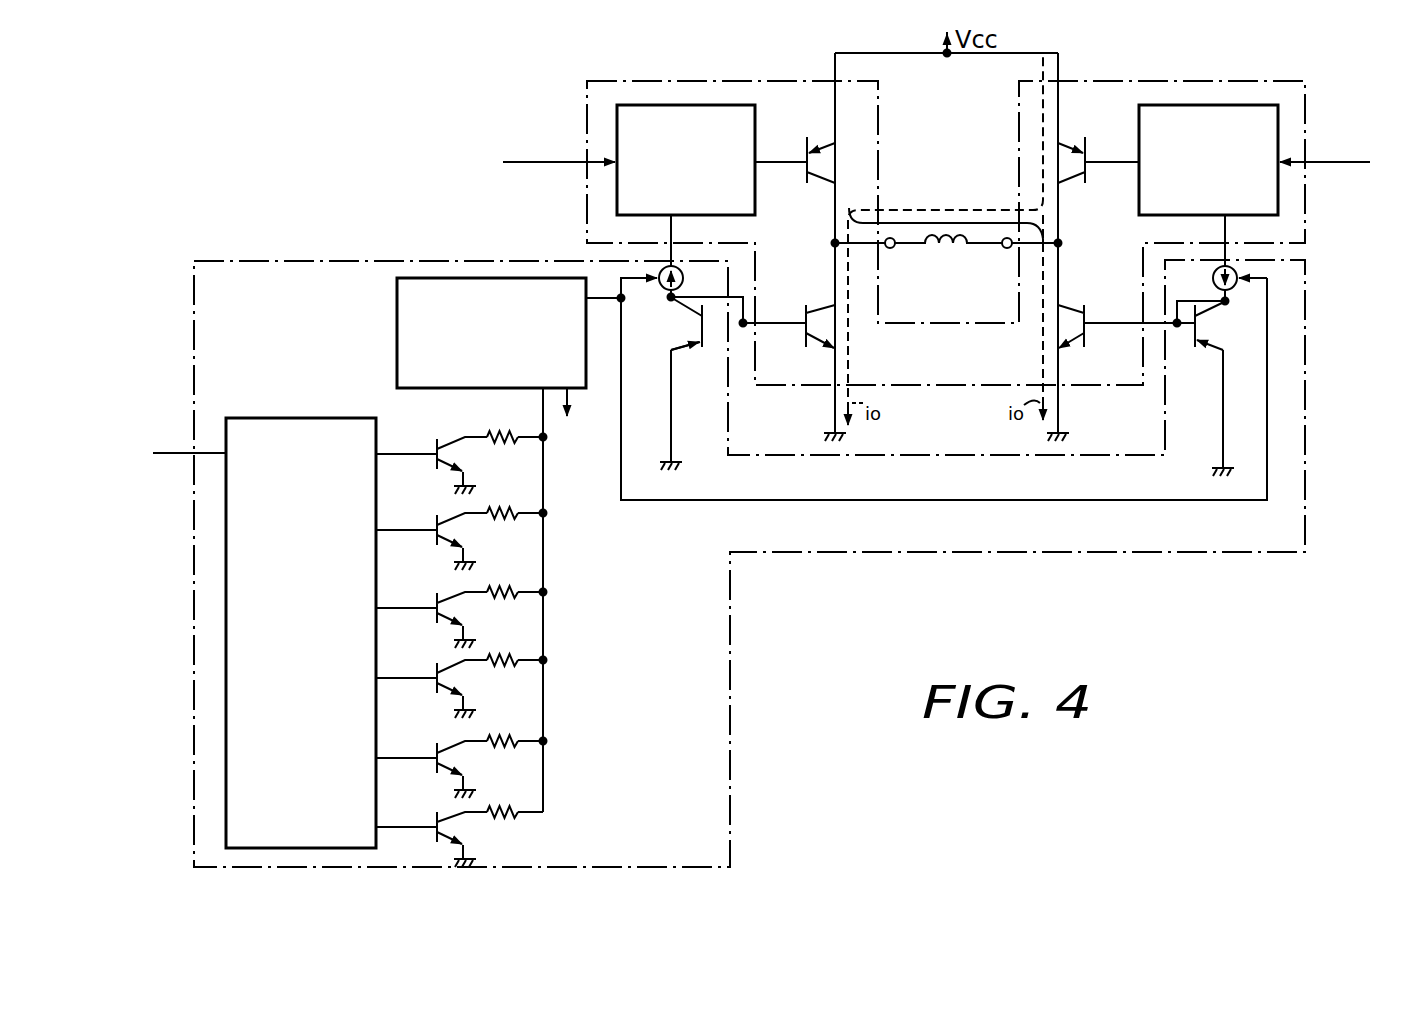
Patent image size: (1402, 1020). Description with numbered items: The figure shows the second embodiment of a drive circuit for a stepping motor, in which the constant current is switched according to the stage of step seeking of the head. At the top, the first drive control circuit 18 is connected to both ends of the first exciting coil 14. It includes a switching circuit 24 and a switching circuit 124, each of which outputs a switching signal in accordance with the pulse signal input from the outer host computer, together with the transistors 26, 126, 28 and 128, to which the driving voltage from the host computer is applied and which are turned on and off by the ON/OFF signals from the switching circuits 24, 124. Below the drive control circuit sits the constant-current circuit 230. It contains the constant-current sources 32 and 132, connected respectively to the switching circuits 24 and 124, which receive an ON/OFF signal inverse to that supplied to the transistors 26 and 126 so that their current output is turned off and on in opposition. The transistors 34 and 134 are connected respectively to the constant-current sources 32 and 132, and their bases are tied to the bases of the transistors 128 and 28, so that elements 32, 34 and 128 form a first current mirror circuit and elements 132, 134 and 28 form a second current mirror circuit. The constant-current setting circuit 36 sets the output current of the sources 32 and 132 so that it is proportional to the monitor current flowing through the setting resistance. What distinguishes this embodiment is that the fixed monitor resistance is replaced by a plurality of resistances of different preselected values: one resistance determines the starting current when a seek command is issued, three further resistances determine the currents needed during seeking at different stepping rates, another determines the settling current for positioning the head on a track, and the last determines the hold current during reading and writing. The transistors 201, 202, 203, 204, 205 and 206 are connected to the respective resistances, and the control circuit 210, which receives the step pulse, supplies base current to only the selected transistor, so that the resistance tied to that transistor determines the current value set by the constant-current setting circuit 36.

The first exciting coil 14 is at (947, 250).
The first drive control circuit 18 is at (902, 386).
The switching circuit 24 is at (757, 183).
The transistor 26 is at (822, 147).
The transistor 28 is at (1088, 346).
The constant-current source 32 is at (667, 288).
The transistor 34 is at (690, 347).
The constant-current setting circuit 36 is at (396, 318).
The switching circuit 124 is at (1139, 208).
The transistor 126 is at (1070, 147).
The transistor 128 is at (816, 347).
The constant-current source 132 is at (1228, 292).
The transistor 134 is at (1203, 345).
The transistor 201 is at (448, 442).
The transistor 202 is at (445, 518).
The transistor 203 is at (447, 592).
The transistor 204 is at (445, 667).
The transistor 205 is at (447, 745).
The transistor 206 is at (445, 815).
The control circuit 210 is at (318, 418).
The constant-current circuit 230 is at (1045, 553).